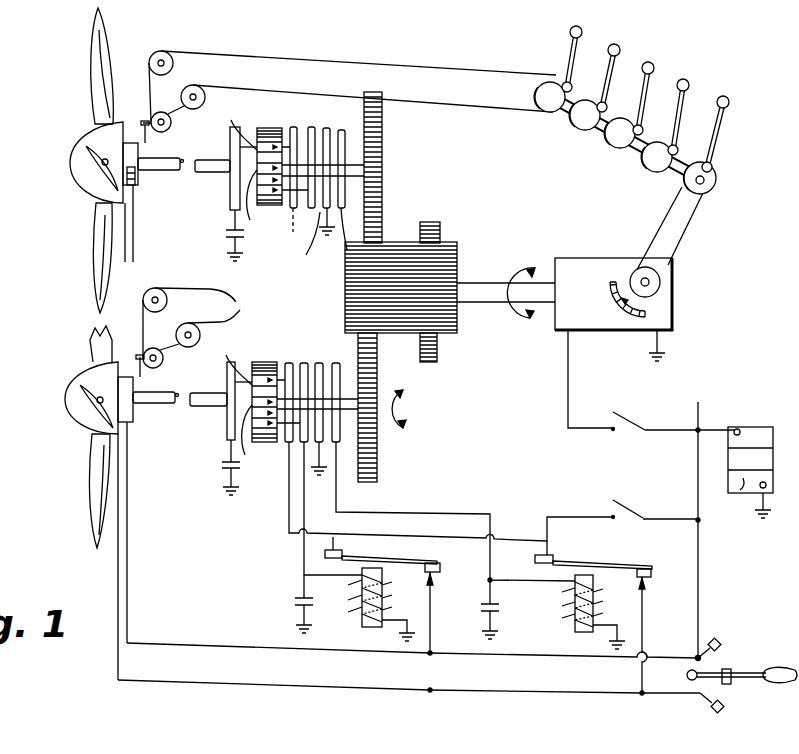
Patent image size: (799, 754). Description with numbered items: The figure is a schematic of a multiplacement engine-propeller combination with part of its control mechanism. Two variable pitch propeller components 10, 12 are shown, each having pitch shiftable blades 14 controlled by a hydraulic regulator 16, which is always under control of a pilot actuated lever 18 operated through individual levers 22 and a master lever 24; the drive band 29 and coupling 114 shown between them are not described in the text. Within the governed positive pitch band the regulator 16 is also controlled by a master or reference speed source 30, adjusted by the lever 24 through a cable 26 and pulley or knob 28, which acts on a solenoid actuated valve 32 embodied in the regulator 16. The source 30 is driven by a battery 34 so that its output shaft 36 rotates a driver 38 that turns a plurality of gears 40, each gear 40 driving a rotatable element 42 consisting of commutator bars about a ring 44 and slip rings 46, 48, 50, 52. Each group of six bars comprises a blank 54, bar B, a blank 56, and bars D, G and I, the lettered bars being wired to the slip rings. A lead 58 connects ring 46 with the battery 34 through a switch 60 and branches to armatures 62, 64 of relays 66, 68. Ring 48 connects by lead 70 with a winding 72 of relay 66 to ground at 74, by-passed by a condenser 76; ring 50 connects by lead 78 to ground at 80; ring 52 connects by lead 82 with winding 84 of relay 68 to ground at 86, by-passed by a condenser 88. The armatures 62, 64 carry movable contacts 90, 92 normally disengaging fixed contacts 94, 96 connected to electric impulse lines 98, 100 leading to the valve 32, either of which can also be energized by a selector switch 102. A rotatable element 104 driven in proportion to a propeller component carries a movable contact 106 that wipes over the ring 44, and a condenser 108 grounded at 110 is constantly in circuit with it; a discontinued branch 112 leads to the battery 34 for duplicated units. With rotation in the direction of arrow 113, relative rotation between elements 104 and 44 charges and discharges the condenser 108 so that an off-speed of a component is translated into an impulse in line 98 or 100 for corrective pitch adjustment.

The variable pitch propeller component 10 is at (345, 488).
The variable pitch propeller component 12 is at (95, 192).
The pitch shiftable blades 14 is at (90, 62).
The hydraulic regulator 16 is at (131, 143).
The pilot actuated lever 18 is at (139, 147).
The levers 22 is at (643, 110).
The master lever 24 is at (718, 122).
The cable 26 is at (692, 236).
The pulley or knob 28 is at (633, 272).
The drive band 29 is at (293, 58).
The master or reference speed source 30 is at (602, 330).
The solenoid actuated valve 32 is at (135, 177).
The battery 34 is at (740, 493).
The output shaft 36 is at (498, 300).
The driver 38 is at (457, 258).
The gears 40 is at (383, 132).
The rotatable element 42 is at (300, 108).
The ring 44 is at (262, 128).
The slip ring 46 is at (290, 212).
The slip ring 48 is at (311, 208).
The slip ring 50 is at (327, 128).
The slip ring 52 is at (345, 206).
The blank bar 54 is at (231, 120).
The blank bar 56 is at (251, 202).
The lead 58 is at (285, 518).
The switch 60 is at (628, 506).
The armature 62 is at (397, 558).
The armature 64 is at (588, 562).
The relay 66 is at (398, 596).
The relay 68 is at (608, 597).
The lead 70 is at (300, 552).
The winding 72 is at (343, 605).
The ground 74 is at (400, 634).
The condenser 76 is at (292, 600).
The lead 78 is at (307, 243).
The ground 80 is at (330, 236).
The lead 82 is at (430, 512).
The winding 84 is at (570, 606).
The ground 86 is at (609, 641).
The condenser 88 is at (483, 608).
The movable contact 90 is at (441, 564).
The movable contact 92 is at (651, 574).
The fixed contact 94 is at (434, 583).
The fixed contact 96 is at (647, 588).
The electric impulse line 98 is at (507, 660).
The electric impulse line 100 is at (505, 697).
The selector switch 102 is at (743, 683).
The rotatable element 104 is at (230, 184).
The movable contact 106 is at (230, 146).
The condenser 108 is at (224, 233).
The ground 110 is at (226, 256).
The discontinued branch 112 is at (704, 414).
The arrow 113 is at (390, 410).
The shaft coupling 114 is at (181, 172).